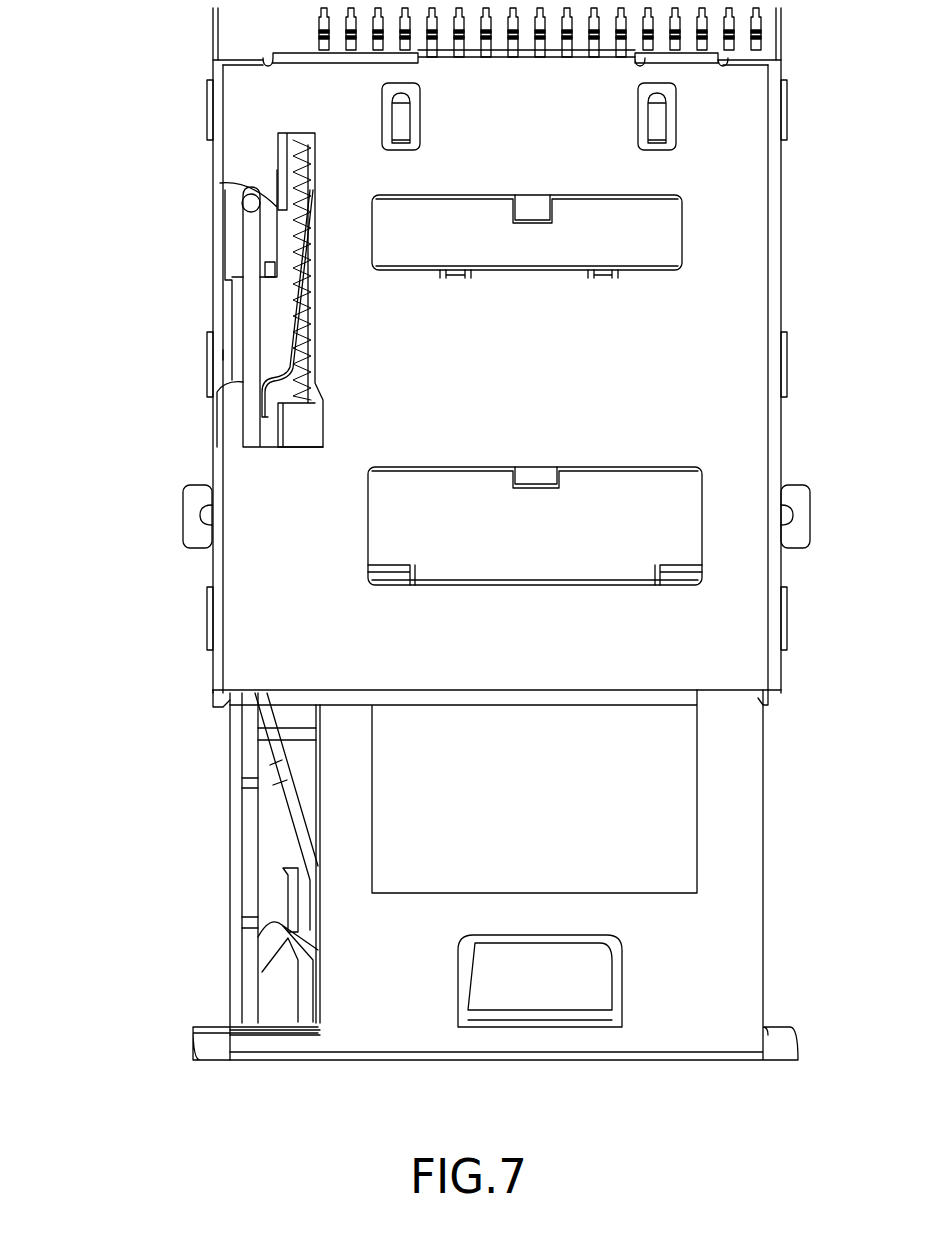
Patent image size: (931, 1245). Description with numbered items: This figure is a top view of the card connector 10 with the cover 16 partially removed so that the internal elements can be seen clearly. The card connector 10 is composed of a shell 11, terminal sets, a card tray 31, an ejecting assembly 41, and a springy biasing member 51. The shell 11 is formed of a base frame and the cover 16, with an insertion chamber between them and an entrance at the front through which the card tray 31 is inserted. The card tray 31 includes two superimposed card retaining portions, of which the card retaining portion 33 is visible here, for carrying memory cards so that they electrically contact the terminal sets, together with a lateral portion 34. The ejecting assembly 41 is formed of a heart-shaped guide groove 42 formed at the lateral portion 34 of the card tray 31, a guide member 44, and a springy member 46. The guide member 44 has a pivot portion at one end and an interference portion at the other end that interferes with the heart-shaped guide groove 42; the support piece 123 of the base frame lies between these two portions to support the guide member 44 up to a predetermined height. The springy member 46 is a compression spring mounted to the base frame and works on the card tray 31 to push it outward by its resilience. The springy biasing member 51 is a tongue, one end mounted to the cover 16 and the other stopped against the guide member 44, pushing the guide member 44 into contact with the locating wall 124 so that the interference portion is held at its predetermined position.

The card connector 10 is at (150, 539).
The shell 11 is at (212, 658).
The cover 16 is at (262, 610).
The card tray 31 is at (232, 885).
The card retaining portion 33 is at (667, 828).
The lateral portion 34 is at (232, 822).
The ejecting assembly 41 is at (243, 353).
The heart-shaped guide groove 42 is at (270, 938).
The guide member 44 is at (240, 300).
The springy member 46 is at (280, 161).
The springy biasing member 51 is at (272, 430).
The support piece 123 is at (268, 265).
The locating wall 124 is at (242, 250).